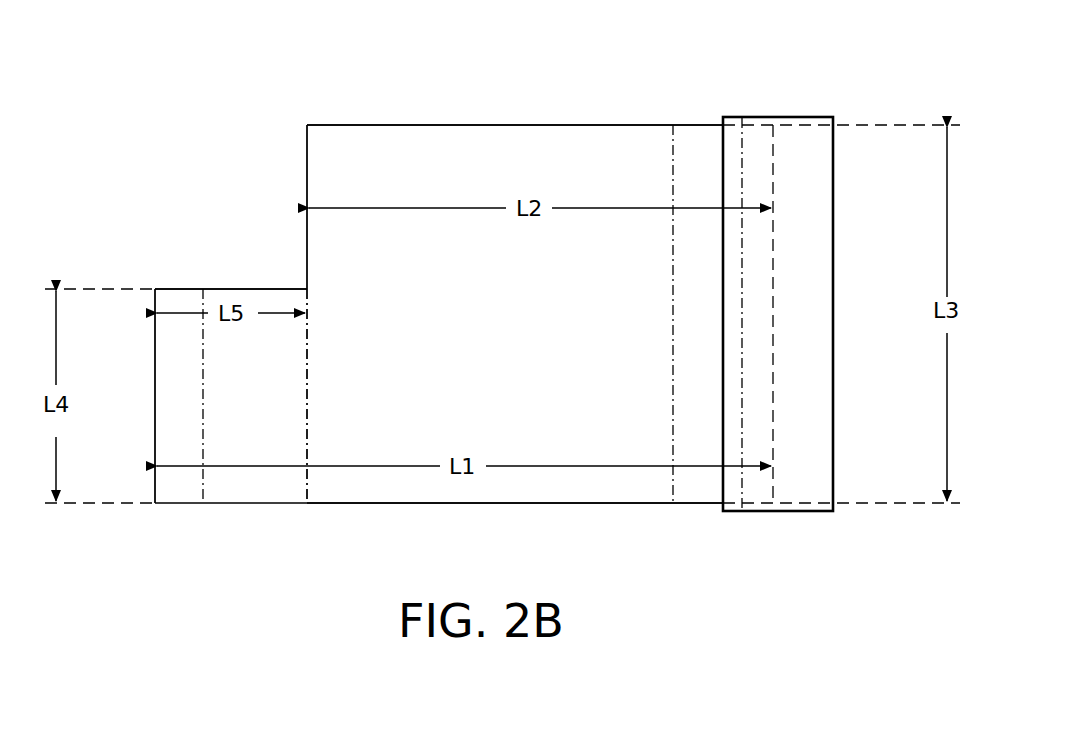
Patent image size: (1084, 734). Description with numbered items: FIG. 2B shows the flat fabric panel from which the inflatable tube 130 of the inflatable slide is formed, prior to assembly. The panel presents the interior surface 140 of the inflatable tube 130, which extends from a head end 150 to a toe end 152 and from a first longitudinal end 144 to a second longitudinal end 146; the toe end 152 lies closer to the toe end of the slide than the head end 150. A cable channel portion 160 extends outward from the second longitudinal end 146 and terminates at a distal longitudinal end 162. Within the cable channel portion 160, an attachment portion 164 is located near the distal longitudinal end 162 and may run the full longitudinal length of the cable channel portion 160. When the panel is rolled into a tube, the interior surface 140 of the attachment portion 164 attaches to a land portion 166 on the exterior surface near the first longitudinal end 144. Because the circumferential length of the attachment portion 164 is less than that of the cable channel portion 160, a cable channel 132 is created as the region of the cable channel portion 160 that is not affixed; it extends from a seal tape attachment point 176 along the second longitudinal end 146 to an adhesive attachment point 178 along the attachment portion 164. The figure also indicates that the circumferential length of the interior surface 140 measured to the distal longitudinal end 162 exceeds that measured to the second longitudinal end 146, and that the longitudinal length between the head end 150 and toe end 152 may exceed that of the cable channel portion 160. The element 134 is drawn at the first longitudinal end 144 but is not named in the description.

The inflatable tube 130 is at (140, 82).
The cable channel 132 is at (305, 284).
The end portion 134 is at (790, 414).
The interior surface 140 is at (515, 314).
The first longitudinal end 144 is at (773, 327).
The second longitudinal end 146 is at (307, 152).
The head end 150 is at (497, 503).
The toe end 152 is at (493, 125).
The cable channel portion 160 is at (307, 521).
The distal longitudinal end 162 is at (155, 338).
The attachment portion 164 is at (203, 284).
The land portion 166 is at (743, 110).
The seal tape attachment point 176 is at (307, 425).
The adhesive attachment point 178 is at (203, 392).